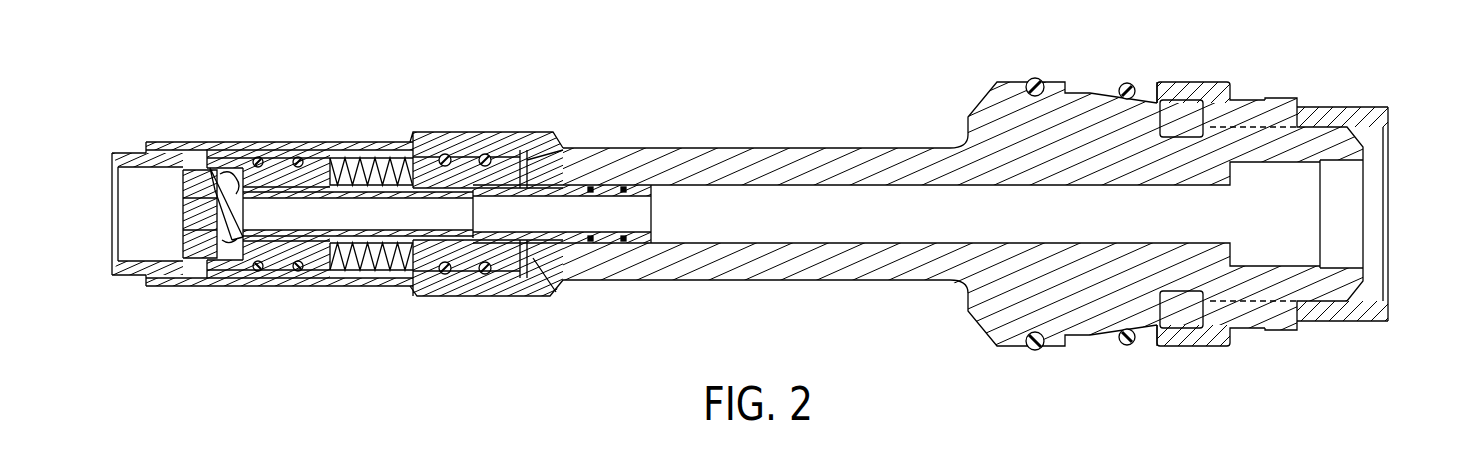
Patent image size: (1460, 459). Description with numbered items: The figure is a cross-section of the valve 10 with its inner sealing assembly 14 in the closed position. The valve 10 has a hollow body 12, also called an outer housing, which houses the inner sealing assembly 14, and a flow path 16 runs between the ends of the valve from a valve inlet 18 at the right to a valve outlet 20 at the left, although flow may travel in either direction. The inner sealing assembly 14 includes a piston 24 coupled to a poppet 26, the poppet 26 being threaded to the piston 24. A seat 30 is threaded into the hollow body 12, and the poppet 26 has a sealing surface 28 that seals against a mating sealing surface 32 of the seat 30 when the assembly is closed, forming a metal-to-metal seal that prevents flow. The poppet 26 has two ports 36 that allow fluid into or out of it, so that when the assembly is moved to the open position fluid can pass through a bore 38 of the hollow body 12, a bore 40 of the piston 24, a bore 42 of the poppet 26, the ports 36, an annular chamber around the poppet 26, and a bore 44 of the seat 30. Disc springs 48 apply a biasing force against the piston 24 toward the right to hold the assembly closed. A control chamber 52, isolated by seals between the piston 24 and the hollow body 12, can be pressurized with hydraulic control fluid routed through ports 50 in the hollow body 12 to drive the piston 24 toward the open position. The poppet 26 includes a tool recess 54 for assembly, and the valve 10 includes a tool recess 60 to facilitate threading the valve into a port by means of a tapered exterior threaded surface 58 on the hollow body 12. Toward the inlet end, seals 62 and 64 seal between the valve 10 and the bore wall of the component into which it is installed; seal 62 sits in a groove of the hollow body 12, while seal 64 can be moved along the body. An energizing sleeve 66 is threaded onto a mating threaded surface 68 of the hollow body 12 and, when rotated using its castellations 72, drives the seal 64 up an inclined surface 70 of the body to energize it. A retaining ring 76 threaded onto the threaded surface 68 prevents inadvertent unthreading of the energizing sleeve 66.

The valve 10 is at (146, 80).
The hollow body 12 is at (757, 148).
The inner sealing assembly 14 is at (410, 284).
The flow path 16 is at (720, 230).
The valve inlet 18 is at (1367, 205).
The valve outlet 20 is at (128, 234).
The piston 24 is at (420, 166).
The poppet 26 is at (207, 180).
The sealing surface 28 is at (222, 192).
The seat 30 is at (160, 150).
The mating sealing surface 32 is at (238, 197).
The ports 36 is at (265, 200).
The bore 38 is at (1020, 188).
The bore 40 is at (620, 197).
The bore 42 is at (348, 196).
The bore 44 is at (134, 169).
The disc springs 48 is at (362, 258).
The ports 50 is at (555, 162).
The control chamber 52 is at (527, 162).
The tool recess 54 is at (205, 230).
The exterior threaded surface 58 is at (478, 300).
The tool recess 60 is at (1305, 265).
The seal 62 is at (1022, 82).
The seal 64 is at (1125, 84).
The energizing sleeve 66 is at (1210, 82).
The threaded surface 68 is at (1325, 122).
The inclined surface 70 is at (1108, 93).
The castellations 72 is at (1282, 98).
The retaining ring 76 is at (1378, 107).